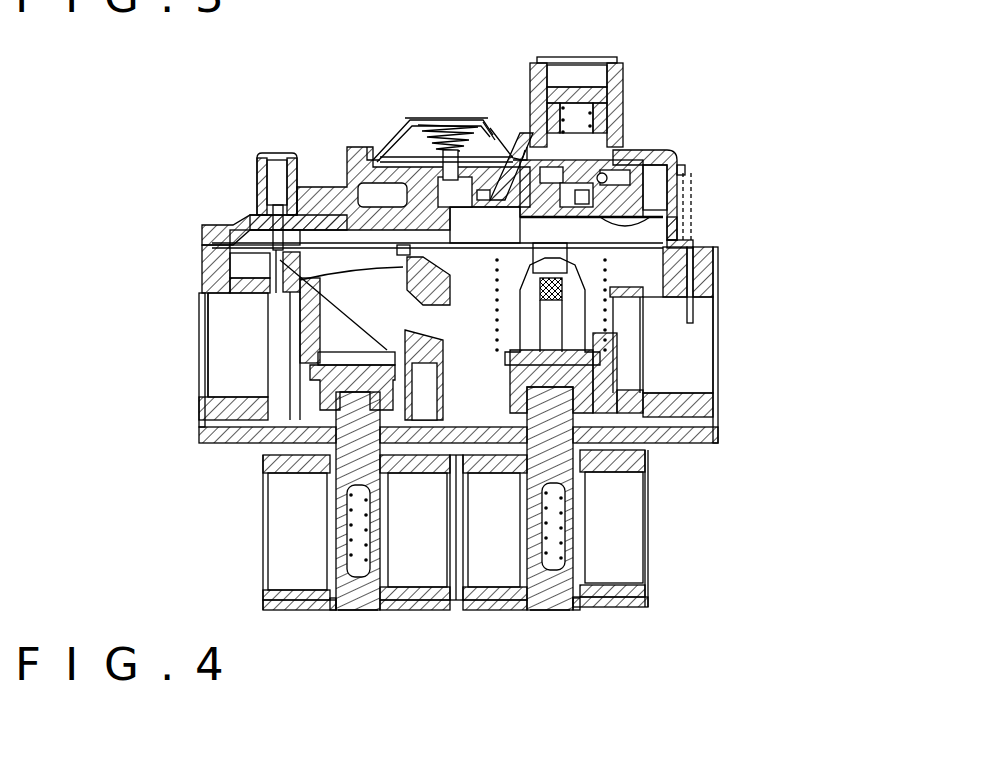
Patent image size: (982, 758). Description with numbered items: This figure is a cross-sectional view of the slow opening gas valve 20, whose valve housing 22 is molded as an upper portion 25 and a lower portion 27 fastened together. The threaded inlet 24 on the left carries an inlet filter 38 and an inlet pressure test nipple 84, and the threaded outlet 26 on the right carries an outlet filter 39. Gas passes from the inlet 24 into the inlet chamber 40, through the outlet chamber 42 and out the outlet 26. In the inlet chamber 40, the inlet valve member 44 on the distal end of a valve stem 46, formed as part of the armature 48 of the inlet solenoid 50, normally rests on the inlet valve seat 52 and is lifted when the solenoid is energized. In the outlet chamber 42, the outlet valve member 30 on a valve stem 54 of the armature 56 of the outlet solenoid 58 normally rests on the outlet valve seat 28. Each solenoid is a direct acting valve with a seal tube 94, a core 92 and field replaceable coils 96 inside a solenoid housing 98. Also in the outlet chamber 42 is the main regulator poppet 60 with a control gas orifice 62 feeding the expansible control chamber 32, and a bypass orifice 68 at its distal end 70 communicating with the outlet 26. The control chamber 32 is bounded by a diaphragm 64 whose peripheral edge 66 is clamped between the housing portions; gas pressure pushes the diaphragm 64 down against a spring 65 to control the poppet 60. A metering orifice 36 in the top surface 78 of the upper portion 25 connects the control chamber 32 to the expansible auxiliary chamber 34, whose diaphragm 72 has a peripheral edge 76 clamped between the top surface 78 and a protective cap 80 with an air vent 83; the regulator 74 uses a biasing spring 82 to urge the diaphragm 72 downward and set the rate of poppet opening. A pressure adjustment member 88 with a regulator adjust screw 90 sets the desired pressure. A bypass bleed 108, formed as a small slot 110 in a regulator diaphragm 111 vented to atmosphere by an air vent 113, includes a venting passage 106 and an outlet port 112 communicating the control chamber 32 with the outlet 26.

The slow opening gas valve 20 is at (722, 42).
The valve housing 22 is at (693, 262).
The inlet 24 is at (240, 330).
The upper portion 25 is at (228, 222).
The outlet 26 is at (670, 353).
The lower portion 27 is at (208, 245).
The outlet valve seat 28 is at (455, 600).
The outlet valve member 30 is at (613, 300).
The expansible control chamber 32 is at (470, 232).
The expansible auxiliary chamber 34 is at (418, 160).
The metering orifice 36 is at (510, 150).
The inlet filter 38 is at (283, 347).
The outlet filter 39 is at (600, 392).
The inlet chamber 40 is at (365, 312).
The outlet chamber 42 is at (700, 432).
The inlet valve member 44 is at (412, 457).
The valve stem 46 is at (325, 440).
The armature 48 is at (363, 527).
The inlet solenoid 50 is at (262, 510).
The inlet valve seat 52 is at (300, 390).
The valve stem 54 is at (640, 445).
The armature 56 is at (583, 485).
The outlet solenoid 58 is at (650, 528).
The main regulator poppet 60 is at (670, 160).
The control gas orifice 62 is at (650, 148).
The diaphragm 64 is at (437, 250).
The spring 65 is at (232, 270).
The peripheral edge 66 is at (697, 217).
The bypass orifice 68 is at (713, 247).
The distal end 70 is at (487, 457).
The diaphragm 72 is at (373, 158).
The regulator 74 is at (446, 90).
The peripheral edge 76 is at (360, 147).
The top surface 78 is at (212, 226).
The protective cap 80 is at (465, 118).
The biasing spring 82 is at (433, 125).
The air vent 83 is at (490, 120).
The inlet pressure test nipple 84 is at (272, 153).
The pressure adjustment member 88 is at (612, 58).
The regulator adjust screw 90 is at (588, 105).
The core 92 is at (372, 608).
The seal tube 94 is at (333, 608).
The field replaceable coils 96 is at (337, 545).
The solenoid housing 98 is at (625, 608).
The venting passage 106 is at (693, 176).
The bypass bleed 108 is at (693, 160).
The slot 110 is at (600, 185).
The regulator diaphragm 111 is at (558, 87).
The outlet port 112 is at (697, 330).
The air vent 113 is at (597, 130).